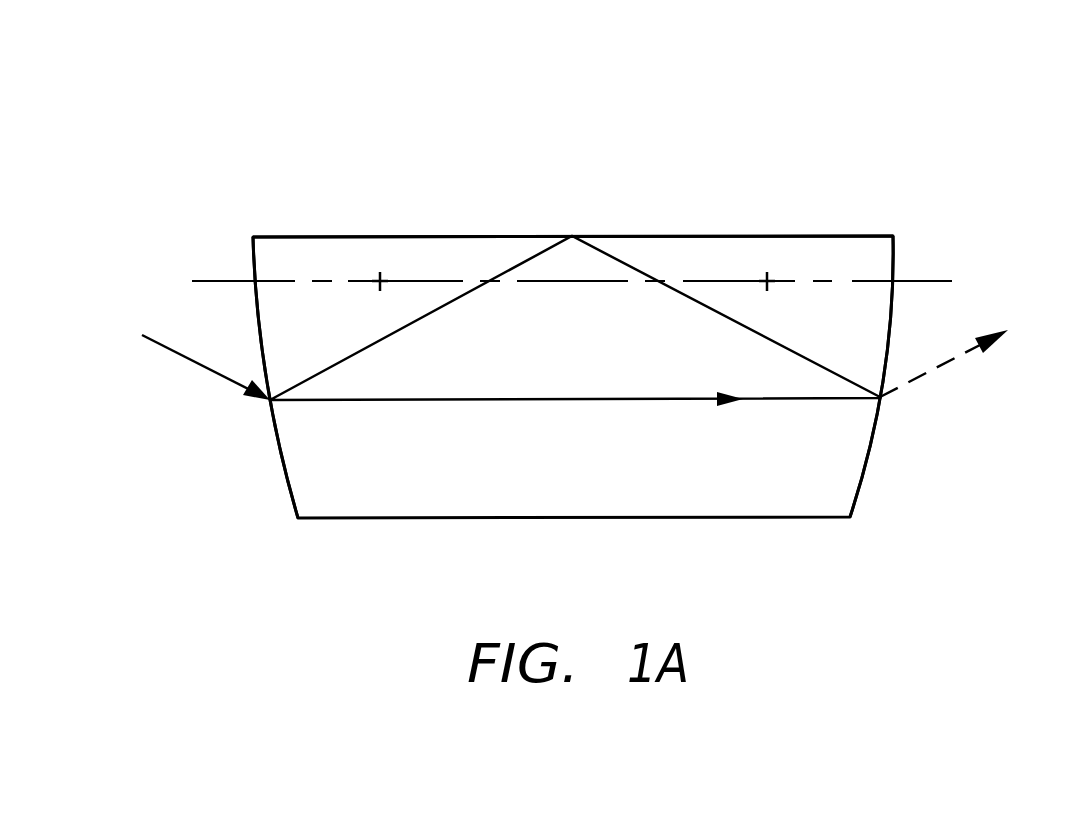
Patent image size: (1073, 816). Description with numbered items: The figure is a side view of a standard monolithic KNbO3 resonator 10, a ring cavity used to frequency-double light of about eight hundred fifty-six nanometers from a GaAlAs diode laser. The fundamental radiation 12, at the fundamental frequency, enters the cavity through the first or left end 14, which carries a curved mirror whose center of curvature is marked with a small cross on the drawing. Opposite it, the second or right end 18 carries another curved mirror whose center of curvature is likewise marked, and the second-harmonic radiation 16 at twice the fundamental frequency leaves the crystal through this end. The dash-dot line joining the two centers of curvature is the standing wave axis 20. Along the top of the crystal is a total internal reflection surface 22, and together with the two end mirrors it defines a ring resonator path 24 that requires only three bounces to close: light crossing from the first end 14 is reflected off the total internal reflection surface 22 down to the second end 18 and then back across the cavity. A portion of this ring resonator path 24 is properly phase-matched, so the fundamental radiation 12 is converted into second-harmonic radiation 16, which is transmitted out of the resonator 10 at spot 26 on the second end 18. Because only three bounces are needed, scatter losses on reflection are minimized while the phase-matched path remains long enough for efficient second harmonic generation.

The monolithic KNbO3 resonator 10 is at (558, 224).
The fundamental radiation 12 is at (188, 363).
The first end 14 is at (277, 452).
The second-harmonic radiation 16 is at (953, 362).
The second end 18 is at (860, 485).
The standing wave axis 20 is at (703, 280).
The total internal reflection surface 22 is at (760, 235).
The ring resonator path 24 is at (597, 402).
The spot 26 is at (885, 400).